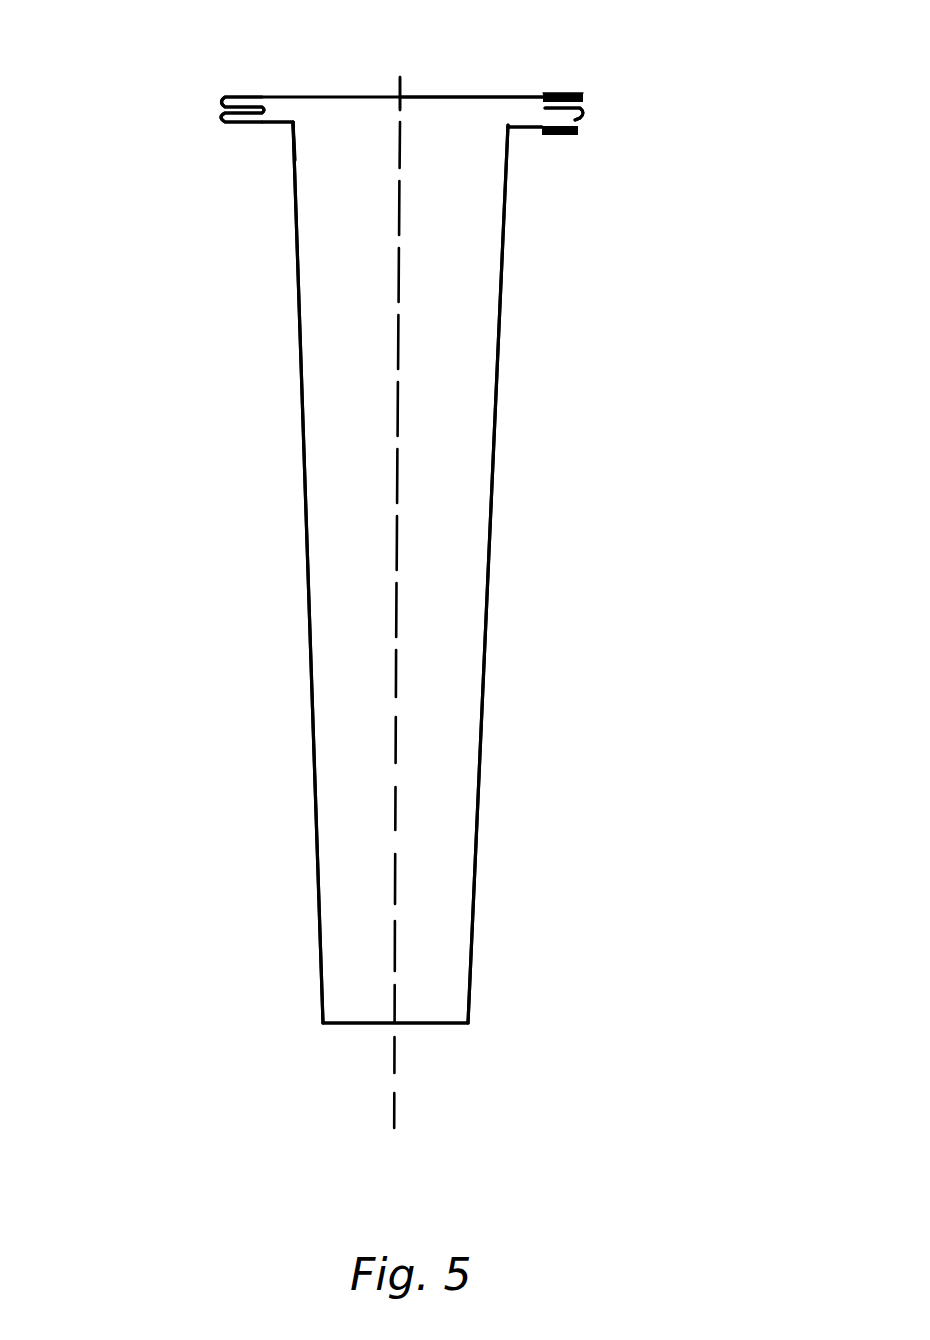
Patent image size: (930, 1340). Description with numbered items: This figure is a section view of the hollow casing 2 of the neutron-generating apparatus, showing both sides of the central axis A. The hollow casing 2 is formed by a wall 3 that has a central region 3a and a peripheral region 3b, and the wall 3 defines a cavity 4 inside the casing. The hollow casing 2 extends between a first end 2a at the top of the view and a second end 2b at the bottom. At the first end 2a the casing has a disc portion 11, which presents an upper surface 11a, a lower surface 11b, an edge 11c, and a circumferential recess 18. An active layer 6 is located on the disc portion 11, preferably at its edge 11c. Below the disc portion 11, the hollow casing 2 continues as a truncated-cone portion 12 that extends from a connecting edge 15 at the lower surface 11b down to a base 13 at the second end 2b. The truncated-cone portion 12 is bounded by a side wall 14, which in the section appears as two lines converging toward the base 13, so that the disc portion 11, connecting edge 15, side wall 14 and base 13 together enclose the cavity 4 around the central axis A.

The hollow casing 2 is at (705, 460).
The first end 2a is at (623, 98).
The second end 2b is at (487, 1023).
The wall 3 is at (308, 628).
The central region 3a is at (372, 63).
The peripheral region 3b is at (367, 70).
The cavity 4 is at (462, 790).
The active layer 6 is at (565, 92).
The disc portion 11 is at (168, 126).
The upper surface 11a is at (445, 97).
The lower surface 11b is at (517, 128).
The edge 11c is at (583, 122).
The truncated-cone portion 12 is at (170, 1025).
The base 13 is at (340, 1028).
The side wall 14 is at (488, 607).
The connecting edge 15 is at (297, 122).
The circumferential recess 18 is at (214, 110).
The central axis A is at (400, 1120).